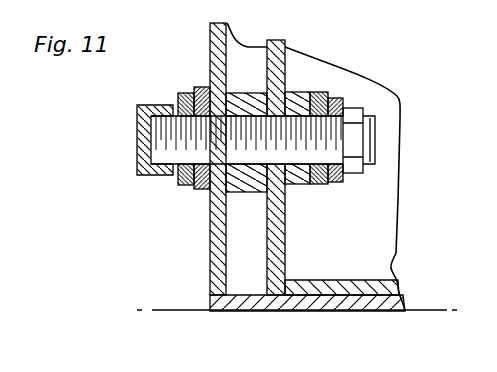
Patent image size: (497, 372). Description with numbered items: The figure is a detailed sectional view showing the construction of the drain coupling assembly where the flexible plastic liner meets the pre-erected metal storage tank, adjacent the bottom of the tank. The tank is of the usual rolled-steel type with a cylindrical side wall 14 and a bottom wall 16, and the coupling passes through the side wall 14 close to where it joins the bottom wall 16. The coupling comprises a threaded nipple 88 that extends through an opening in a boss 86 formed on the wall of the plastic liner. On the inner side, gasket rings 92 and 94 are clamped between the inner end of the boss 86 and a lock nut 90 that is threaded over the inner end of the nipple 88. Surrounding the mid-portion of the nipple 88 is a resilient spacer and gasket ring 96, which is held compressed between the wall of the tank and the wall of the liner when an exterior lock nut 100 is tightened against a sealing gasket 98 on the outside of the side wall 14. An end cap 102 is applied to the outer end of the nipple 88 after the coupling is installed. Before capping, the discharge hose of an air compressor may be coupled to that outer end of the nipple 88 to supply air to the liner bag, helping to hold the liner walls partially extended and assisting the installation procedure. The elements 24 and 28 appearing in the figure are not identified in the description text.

The cylindrical side wall 14 is at (211, 238).
The bottom wall 16 is at (377, 306).
The upright bracket member 24 is at (280, 70).
The bracket flange 28 is at (390, 290).
The boss 86 is at (308, 184).
The threaded nipple 88 is at (300, 117).
The lock nut 90 is at (353, 113).
The gasket ring 92 is at (343, 181).
The gasket ring 94 is at (327, 184).
The resilient spacer and gasket ring 96 is at (245, 193).
The sealing gasket 98 is at (200, 190).
The exterior lock nut 100 is at (188, 183).
The end cap 102 is at (137, 113).